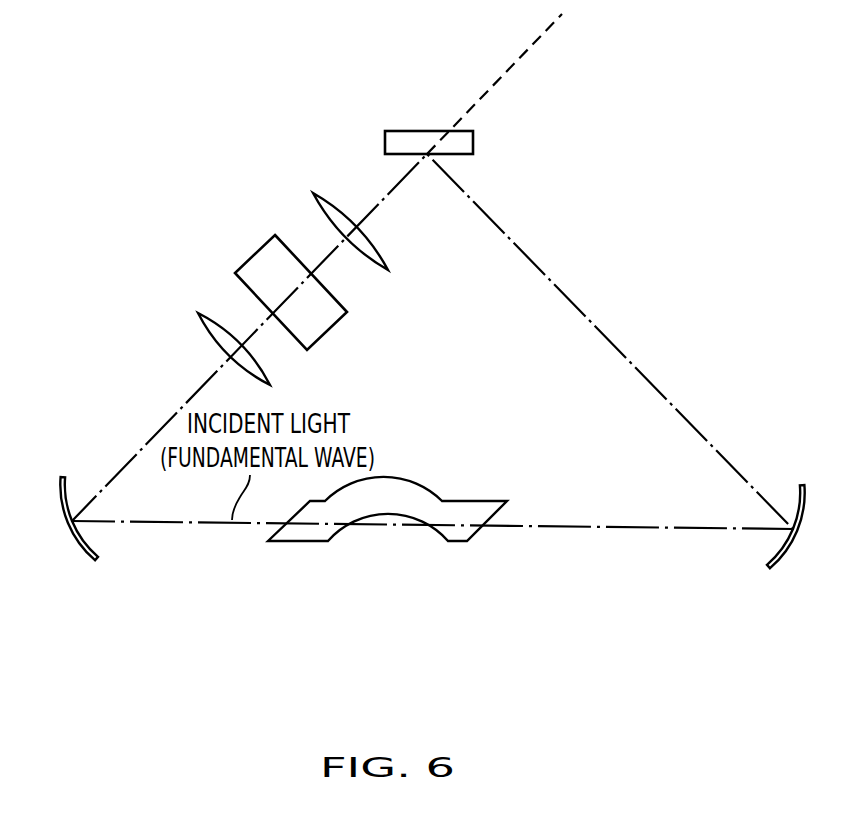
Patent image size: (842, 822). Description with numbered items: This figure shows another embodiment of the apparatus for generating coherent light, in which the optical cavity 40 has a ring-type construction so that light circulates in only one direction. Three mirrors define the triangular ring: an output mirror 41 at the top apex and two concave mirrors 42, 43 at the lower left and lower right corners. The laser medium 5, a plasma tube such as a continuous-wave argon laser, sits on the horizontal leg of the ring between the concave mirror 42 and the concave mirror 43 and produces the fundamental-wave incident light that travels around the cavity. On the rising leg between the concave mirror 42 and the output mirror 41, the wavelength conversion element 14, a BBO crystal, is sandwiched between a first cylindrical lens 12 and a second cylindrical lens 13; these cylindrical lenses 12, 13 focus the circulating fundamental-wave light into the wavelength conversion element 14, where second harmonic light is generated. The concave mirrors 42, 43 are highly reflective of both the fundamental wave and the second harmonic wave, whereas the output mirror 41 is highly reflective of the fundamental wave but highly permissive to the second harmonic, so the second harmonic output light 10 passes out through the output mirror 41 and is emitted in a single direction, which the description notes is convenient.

The laser medium 5 is at (393, 557).
The second harmonic light 10 is at (522, 58).
The cylindrical lens 12 is at (202, 332).
The cylindrical lens 13 is at (336, 194).
The wavelength conversion element 14 is at (323, 318).
The optical cavity 40 is at (240, 544).
The output mirror 41 is at (397, 130).
The concave mirror 42 is at (73, 540).
The concave mirror 43 is at (783, 563).